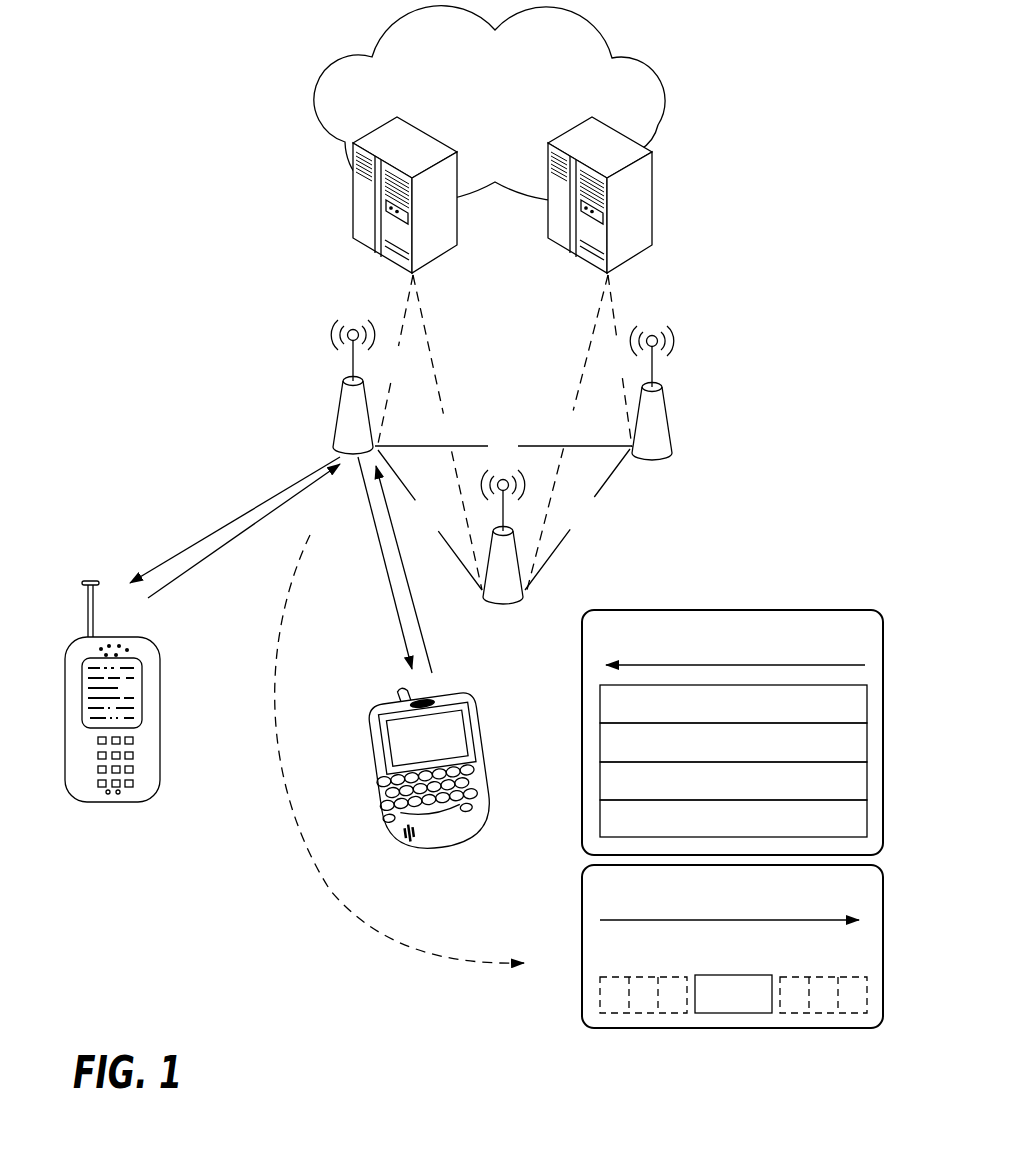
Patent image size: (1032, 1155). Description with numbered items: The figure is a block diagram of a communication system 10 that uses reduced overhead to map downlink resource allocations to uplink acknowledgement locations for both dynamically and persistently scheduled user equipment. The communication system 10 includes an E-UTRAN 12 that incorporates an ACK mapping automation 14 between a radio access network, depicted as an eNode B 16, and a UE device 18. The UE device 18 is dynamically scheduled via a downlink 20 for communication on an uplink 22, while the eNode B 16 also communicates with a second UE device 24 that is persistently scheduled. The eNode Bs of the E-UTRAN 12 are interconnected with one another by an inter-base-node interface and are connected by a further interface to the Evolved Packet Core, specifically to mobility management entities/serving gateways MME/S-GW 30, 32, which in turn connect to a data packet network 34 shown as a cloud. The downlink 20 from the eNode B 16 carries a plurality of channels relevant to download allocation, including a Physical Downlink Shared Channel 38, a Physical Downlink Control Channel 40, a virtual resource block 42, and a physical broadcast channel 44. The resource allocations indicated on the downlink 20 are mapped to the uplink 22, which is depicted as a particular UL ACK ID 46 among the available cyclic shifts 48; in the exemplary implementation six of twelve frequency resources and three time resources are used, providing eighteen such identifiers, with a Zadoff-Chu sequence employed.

The communication system 10 is at (780, 77).
The E-UTRAN 12 is at (793, 377).
The ACK mapping automation 14 is at (262, 437).
The eNode B 16 is at (345, 384).
The UE device 18 is at (160, 655).
The downlink 20 is at (160, 565).
The uplink 22 is at (172, 587).
The UE device 24 is at (483, 780).
The MME/S-GW 30 is at (378, 250).
The MME/S-GW 32 is at (652, 253).
The data packet network 34 is at (658, 125).
The Physical Downlink Shared Channel 38 is at (795, 792).
The Physical Downlink Control Channel 40 is at (795, 717).
The virtual resource block 42 is at (776, 754).
The physical broadcast channel 44 is at (788, 831).
The UL ACK ID 46 is at (735, 1015).
The cyclic shifts 48 is at (871, 962).